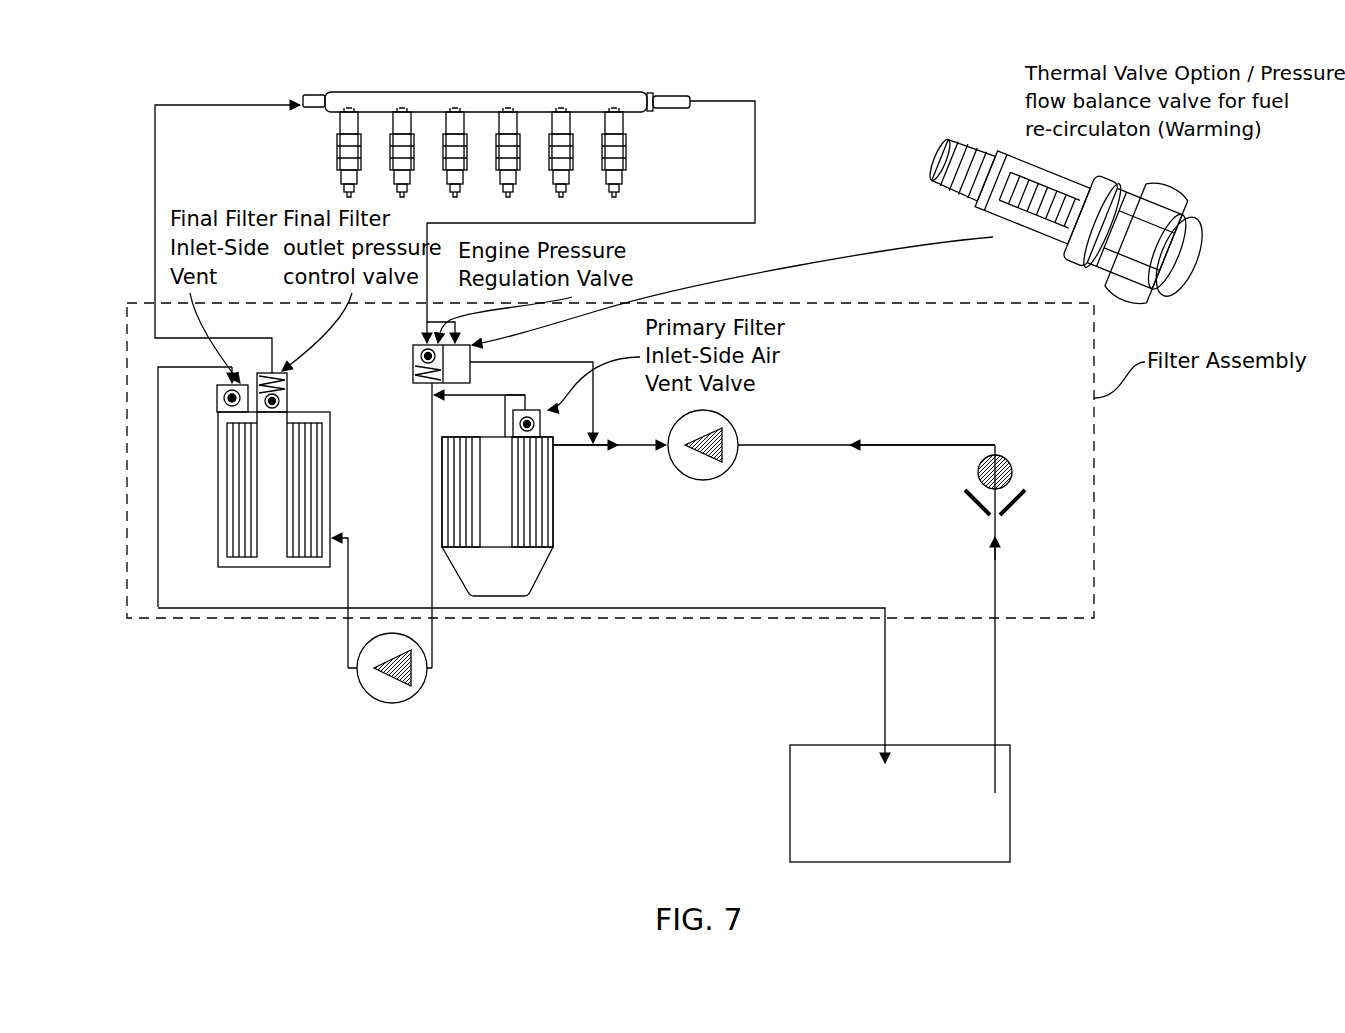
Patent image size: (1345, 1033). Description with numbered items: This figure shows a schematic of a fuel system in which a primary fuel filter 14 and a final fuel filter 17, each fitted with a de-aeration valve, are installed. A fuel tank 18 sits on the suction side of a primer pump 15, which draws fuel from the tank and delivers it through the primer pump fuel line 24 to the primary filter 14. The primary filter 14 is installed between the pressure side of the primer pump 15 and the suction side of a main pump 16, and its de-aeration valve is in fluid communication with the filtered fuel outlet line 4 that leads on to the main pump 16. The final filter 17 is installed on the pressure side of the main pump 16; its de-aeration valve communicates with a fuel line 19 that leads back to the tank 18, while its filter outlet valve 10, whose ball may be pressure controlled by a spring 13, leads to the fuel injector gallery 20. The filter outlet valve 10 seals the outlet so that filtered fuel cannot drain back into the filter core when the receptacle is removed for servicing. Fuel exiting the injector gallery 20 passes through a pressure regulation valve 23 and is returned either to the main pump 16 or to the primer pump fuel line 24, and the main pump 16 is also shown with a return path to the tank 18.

The fuel injector gallery 20 is at (586, 93).
The pressure regulation valve 23 is at (413, 357).
The primer pump fuel line 24 is at (596, 405).
The filtered fuel outlet line 4 is at (472, 397).
The primary fuel filter 14 is at (554, 535).
The primer pump 15 is at (736, 426).
The spring 13 is at (240, 350).
The filter outlet valve 10 is at (288, 400).
The fuel line 19 is at (158, 480).
The final fuel filter 17 is at (218, 547).
The main pump 16 is at (410, 697).
The fuel tank 18 is at (790, 810).